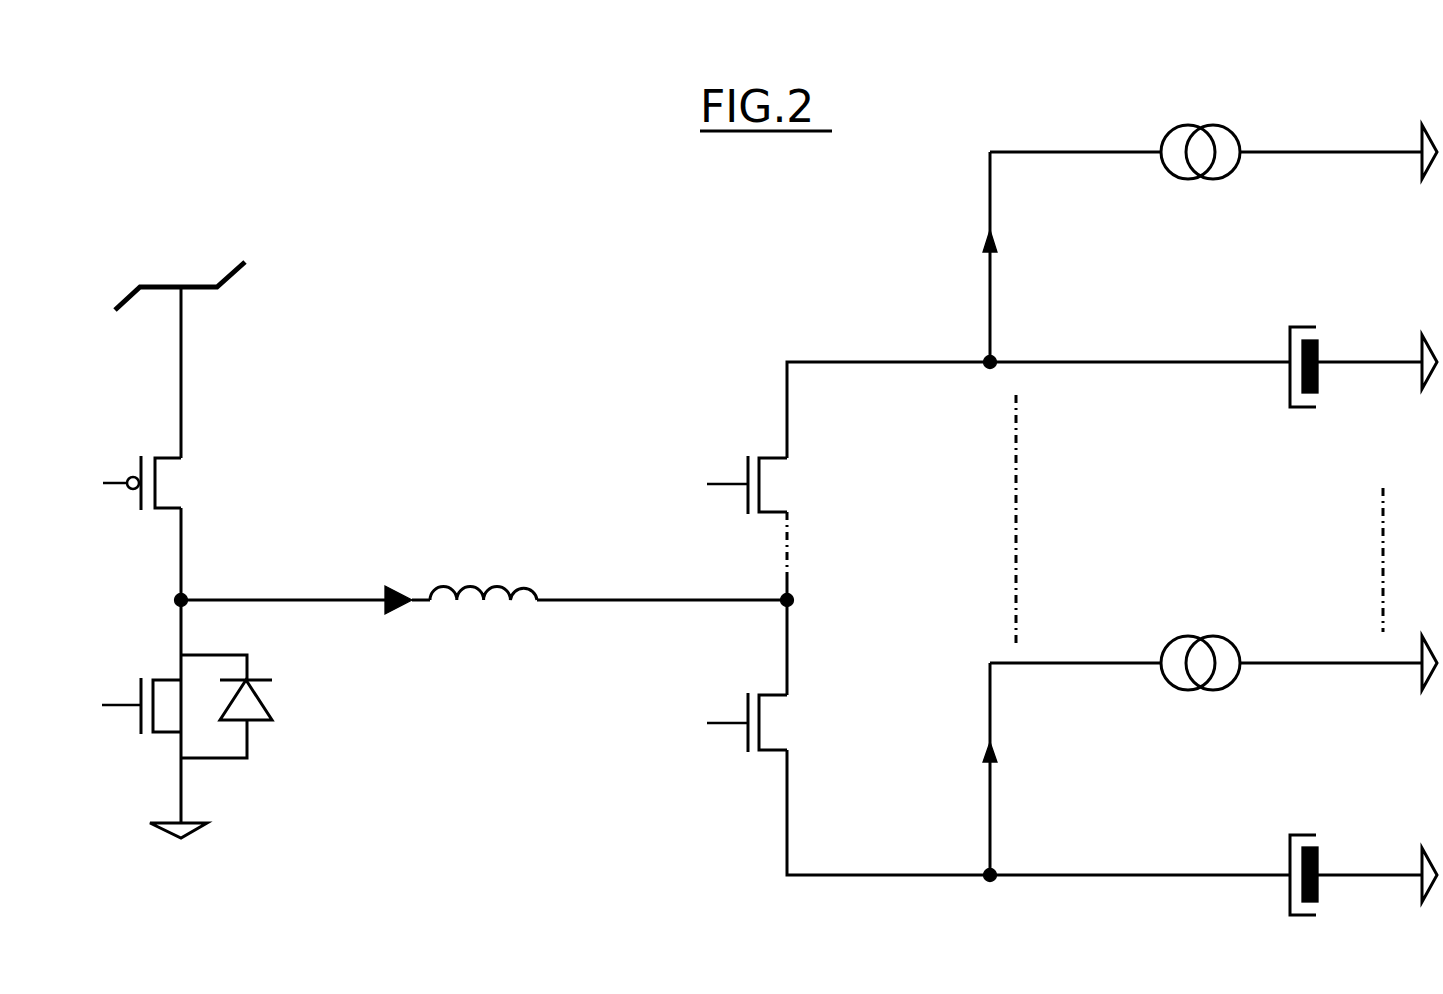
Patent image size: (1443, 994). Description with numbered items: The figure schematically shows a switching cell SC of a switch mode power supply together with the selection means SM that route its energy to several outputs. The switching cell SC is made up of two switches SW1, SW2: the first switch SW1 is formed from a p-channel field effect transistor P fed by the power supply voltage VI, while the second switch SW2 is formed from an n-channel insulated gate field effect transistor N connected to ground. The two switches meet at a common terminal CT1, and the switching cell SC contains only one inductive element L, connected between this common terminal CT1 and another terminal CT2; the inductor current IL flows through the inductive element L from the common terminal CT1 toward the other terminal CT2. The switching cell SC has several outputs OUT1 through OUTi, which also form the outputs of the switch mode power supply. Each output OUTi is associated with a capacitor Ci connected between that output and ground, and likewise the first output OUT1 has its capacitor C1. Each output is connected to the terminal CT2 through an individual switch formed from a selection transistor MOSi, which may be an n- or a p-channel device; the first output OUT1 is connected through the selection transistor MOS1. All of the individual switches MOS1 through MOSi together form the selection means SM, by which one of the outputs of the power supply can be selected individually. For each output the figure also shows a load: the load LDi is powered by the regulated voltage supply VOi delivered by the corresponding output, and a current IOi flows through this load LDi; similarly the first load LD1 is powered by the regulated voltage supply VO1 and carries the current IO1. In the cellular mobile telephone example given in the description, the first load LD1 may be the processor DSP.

The switching cell SC is at (493, 317).
The selection means SM is at (737, 382).
The power supply voltage VI is at (180, 277).
The first switch SW1 is at (197, 487).
The second switch SW2 is at (287, 708).
The p-channel field effect transistor P is at (142, 469).
The n-channel insulated gate field effect transistor N is at (141, 691).
The common terminal CT1 is at (188, 593).
The other terminal CT2 is at (795, 595).
The inductor current IL is at (332, 600).
The inductive element L is at (599, 581).
The selection transistor MOSi is at (743, 472).
The first selection transistor MOS1 is at (740, 708).
The output OUTi is at (995, 358).
The first output OUT1 is at (995, 868).
The load current IOi is at (1020, 257).
The first load current IO1 is at (1026, 769).
The regulated voltage supply VOi is at (1075, 130).
The first regulated voltage supply VO1 is at (1075, 640).
The load LDi is at (1217, 115).
The first load LD1 is at (1210, 628).
The capacitor Ci is at (1213, 351).
The first capacitor C1 is at (1213, 859).